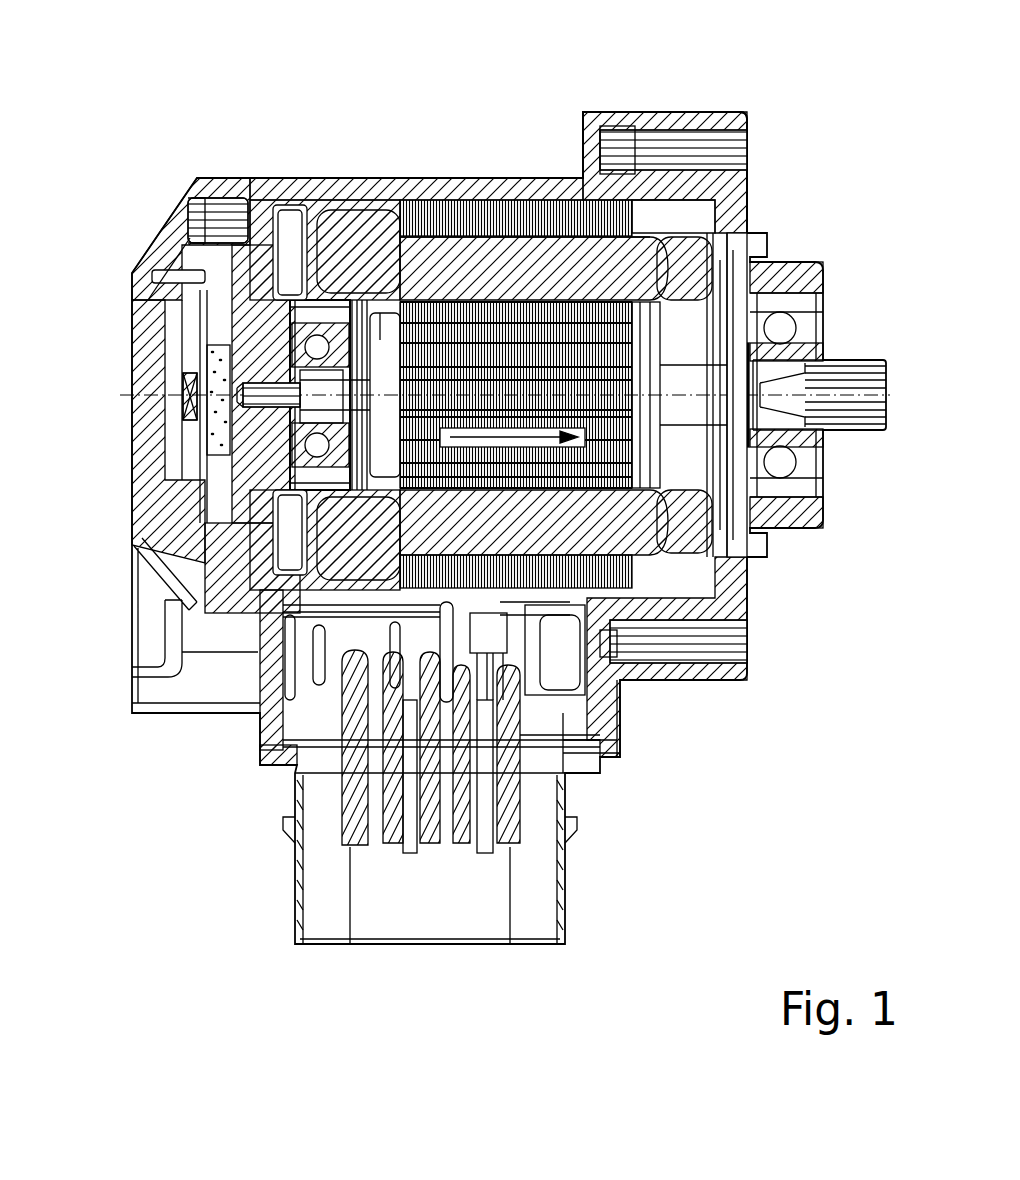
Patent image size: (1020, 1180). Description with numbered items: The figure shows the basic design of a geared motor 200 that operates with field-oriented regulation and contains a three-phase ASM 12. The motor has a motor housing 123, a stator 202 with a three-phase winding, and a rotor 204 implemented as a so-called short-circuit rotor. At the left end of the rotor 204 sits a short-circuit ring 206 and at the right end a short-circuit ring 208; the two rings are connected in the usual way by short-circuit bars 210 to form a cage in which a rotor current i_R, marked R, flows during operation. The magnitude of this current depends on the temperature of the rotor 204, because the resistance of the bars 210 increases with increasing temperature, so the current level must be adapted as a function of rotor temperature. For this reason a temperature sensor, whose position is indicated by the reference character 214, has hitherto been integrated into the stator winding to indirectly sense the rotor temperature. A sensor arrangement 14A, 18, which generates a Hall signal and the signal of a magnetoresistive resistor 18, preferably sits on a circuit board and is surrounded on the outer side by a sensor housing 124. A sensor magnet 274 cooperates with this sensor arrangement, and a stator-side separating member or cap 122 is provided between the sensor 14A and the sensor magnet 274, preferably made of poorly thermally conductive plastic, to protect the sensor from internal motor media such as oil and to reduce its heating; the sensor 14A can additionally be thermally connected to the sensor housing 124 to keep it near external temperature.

The three-phase ASM 12 is at (797, 74).
The geared motor 200 is at (186, 49).
The cap 122 is at (130, 343).
The sensor housing 124 is at (167, 235).
The motor housing 123 is at (363, 190).
The temperature sensor position 214 is at (295, 178).
The short-circuit ring 206 is at (395, 300).
The stator 202 is at (445, 300).
The rotor current R is at (440, 300).
The short-circuit bars 210 is at (530, 300).
The short-circuit ring 208 is at (750, 260).
The rotor 204 is at (767, 527).
The sensor arrangement 14A is at (183, 397).
The magnetoresistive resistor 18 is at (190, 396).
The sensor magnet 274 is at (132, 516).